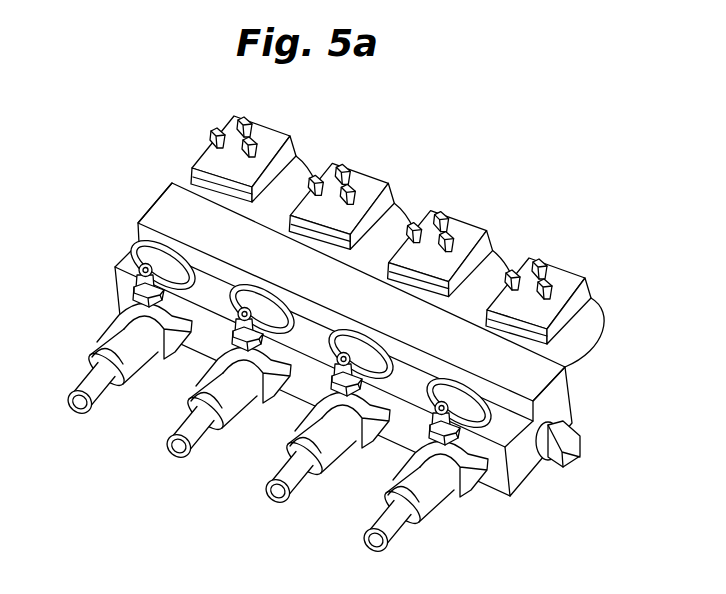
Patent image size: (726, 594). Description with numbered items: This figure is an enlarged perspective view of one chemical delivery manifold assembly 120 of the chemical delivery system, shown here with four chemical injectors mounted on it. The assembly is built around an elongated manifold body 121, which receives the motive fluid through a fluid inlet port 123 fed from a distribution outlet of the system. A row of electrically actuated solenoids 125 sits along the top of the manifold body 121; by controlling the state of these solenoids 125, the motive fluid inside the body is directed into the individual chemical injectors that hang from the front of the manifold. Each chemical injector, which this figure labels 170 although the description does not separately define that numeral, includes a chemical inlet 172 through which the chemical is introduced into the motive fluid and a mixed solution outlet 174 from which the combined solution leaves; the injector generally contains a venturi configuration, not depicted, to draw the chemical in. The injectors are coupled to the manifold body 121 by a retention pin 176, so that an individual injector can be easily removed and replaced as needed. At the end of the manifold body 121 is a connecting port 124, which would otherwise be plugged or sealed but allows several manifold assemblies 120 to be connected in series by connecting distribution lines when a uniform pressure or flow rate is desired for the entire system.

The chemical delivery manifold assembly 120 is at (353, 316).
The manifold body 121 is at (177, 158).
The fluid inlet port 123 is at (161, 200).
The connecting port 124 is at (575, 402).
The electrically actuated solenoid 125 is at (560, 280).
The valve 170 is at (113, 344).
The chemical inlet 172 is at (137, 262).
The mixed solution outlet 174 is at (122, 348).
The retention pin 176 is at (510, 430).